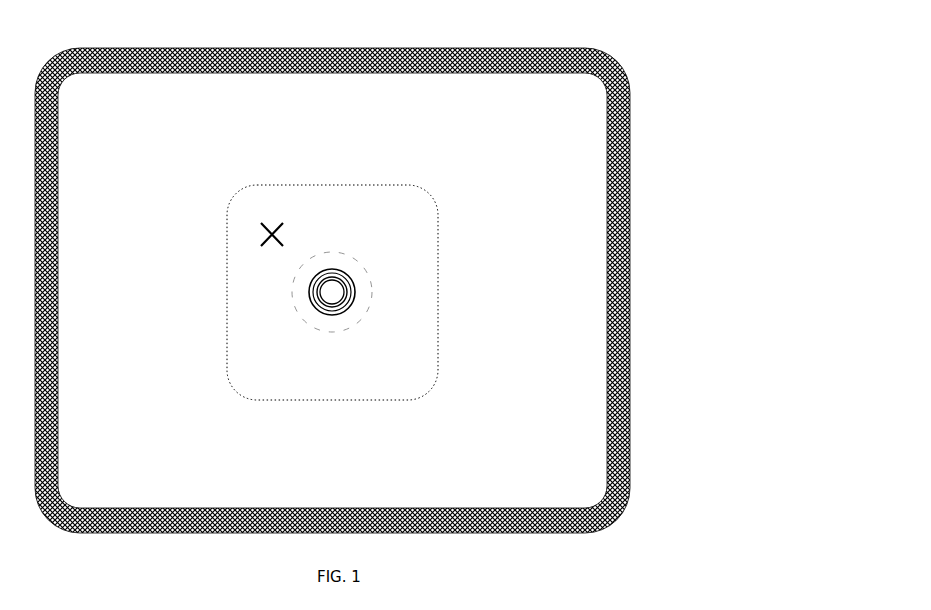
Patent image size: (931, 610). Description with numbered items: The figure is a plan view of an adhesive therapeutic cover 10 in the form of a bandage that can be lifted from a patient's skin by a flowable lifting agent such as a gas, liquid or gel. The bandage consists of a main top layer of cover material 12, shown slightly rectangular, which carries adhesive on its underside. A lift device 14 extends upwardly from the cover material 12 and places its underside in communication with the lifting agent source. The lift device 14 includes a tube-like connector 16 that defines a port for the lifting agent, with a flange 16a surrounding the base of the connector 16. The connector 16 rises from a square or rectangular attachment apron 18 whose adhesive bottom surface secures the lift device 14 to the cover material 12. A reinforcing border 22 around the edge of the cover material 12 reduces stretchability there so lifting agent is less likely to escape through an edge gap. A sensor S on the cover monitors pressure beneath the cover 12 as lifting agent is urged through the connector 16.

The adhesive therapeutic cover 10 is at (626, 56).
The cover material 12 is at (547, 197).
The lift device 14 is at (338, 269).
The connector 16 is at (309, 292).
The flange 16a is at (327, 316).
The attachment apron 18 is at (410, 313).
The reinforcing border 22 is at (631, 300).
The sensor S is at (256, 233).